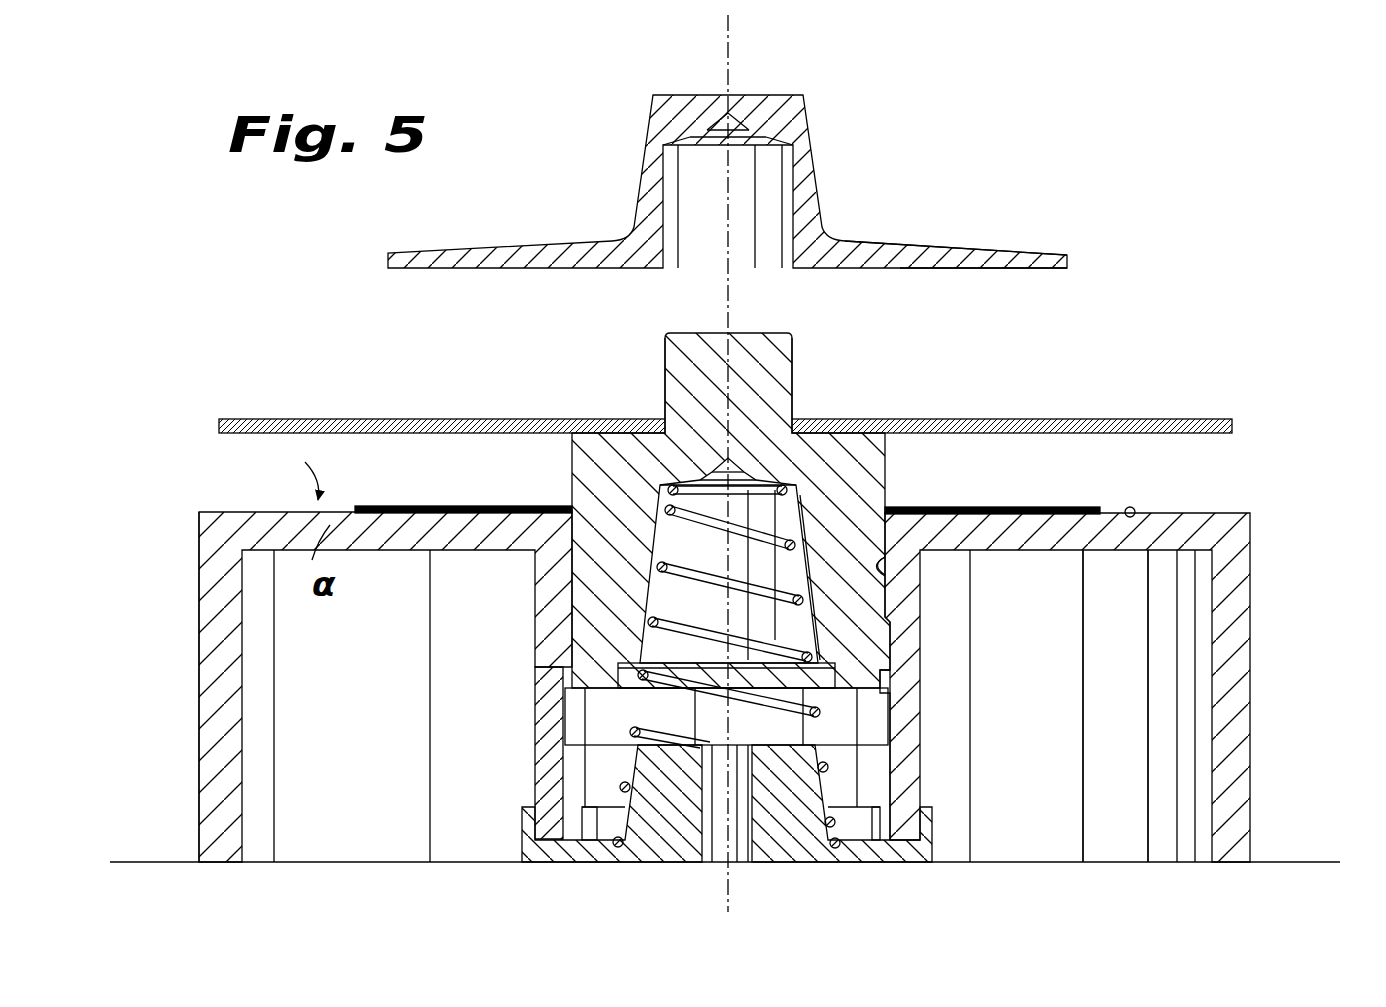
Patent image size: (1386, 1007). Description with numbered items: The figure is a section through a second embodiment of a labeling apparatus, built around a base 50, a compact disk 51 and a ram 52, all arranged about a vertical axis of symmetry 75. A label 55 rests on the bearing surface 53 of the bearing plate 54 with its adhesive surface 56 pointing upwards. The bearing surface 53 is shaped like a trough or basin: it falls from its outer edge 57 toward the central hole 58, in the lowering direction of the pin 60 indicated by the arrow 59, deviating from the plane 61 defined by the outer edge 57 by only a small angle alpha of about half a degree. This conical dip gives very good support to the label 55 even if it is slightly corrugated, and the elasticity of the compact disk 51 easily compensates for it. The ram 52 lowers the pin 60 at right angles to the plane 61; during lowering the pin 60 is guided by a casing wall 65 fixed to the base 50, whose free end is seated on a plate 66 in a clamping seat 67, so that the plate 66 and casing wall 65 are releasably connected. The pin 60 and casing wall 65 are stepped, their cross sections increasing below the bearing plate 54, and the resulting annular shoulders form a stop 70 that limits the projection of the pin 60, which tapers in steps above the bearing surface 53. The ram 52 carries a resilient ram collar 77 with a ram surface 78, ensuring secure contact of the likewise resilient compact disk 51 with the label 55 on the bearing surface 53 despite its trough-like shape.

The base 50 is at (1272, 514).
The compact disk 51 is at (1234, 421).
The ram 52 is at (826, 149).
The bearing surface 53 is at (1148, 542).
The bearing plate 54 is at (1073, 542).
The label 55 is at (1102, 514).
The adhesive surface 56 is at (993, 511).
The outer edge 57 is at (199, 512).
The central hole 58 is at (879, 575).
The arrow 59 is at (729, 318).
The pin 60 is at (824, 468).
The plane 61 is at (338, 512).
The casing wall 65 is at (890, 700).
The plate 66 is at (683, 862).
The clamping seat 67 is at (932, 792).
The stop 70 is at (558, 667).
The axis of symmetry 75 is at (787, 463).
The ram collar 77 is at (965, 243).
The ram surface 78 is at (1036, 270).